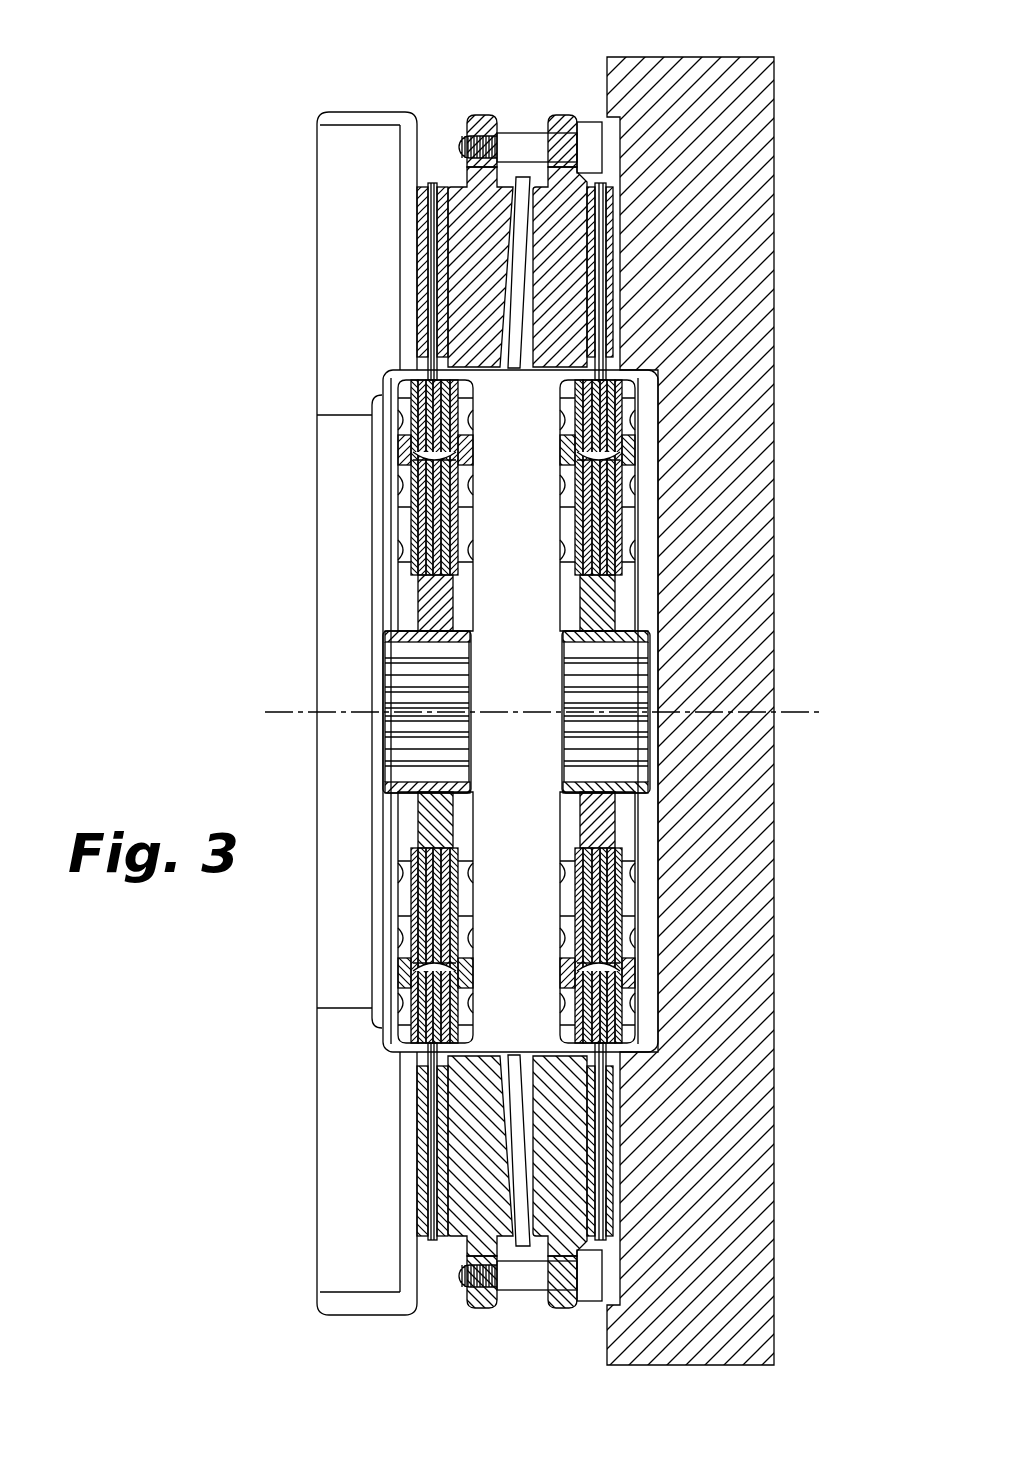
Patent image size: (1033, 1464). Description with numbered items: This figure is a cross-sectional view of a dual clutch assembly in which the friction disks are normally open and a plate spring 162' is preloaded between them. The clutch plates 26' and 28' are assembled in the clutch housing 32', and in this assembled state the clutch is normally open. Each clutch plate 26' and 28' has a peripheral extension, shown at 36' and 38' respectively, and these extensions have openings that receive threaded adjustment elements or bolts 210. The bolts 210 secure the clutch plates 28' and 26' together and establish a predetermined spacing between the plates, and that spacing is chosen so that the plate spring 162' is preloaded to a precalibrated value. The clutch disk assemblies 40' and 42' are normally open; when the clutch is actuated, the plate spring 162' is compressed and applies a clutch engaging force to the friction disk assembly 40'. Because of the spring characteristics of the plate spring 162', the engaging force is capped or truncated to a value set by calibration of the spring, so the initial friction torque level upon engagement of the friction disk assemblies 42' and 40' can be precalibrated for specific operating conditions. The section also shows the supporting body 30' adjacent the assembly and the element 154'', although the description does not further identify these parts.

The clutch plate 28' is at (469, 645).
The peripheral extension 38' is at (493, 656).
The clutch plate 26' is at (558, 630).
The peripheral extension 36' is at (584, 656).
The threaded adjustment bolt 210 is at (587, 147).
The support block 30' is at (731, 710).
The clutch housing 32' is at (367, 713).
The friction disk assembly 40' is at (338, 711).
The clutch disk assembly 42' is at (621, 680).
The plate spring 162' is at (377, 711).
The bushing 154'' is at (545, 683).